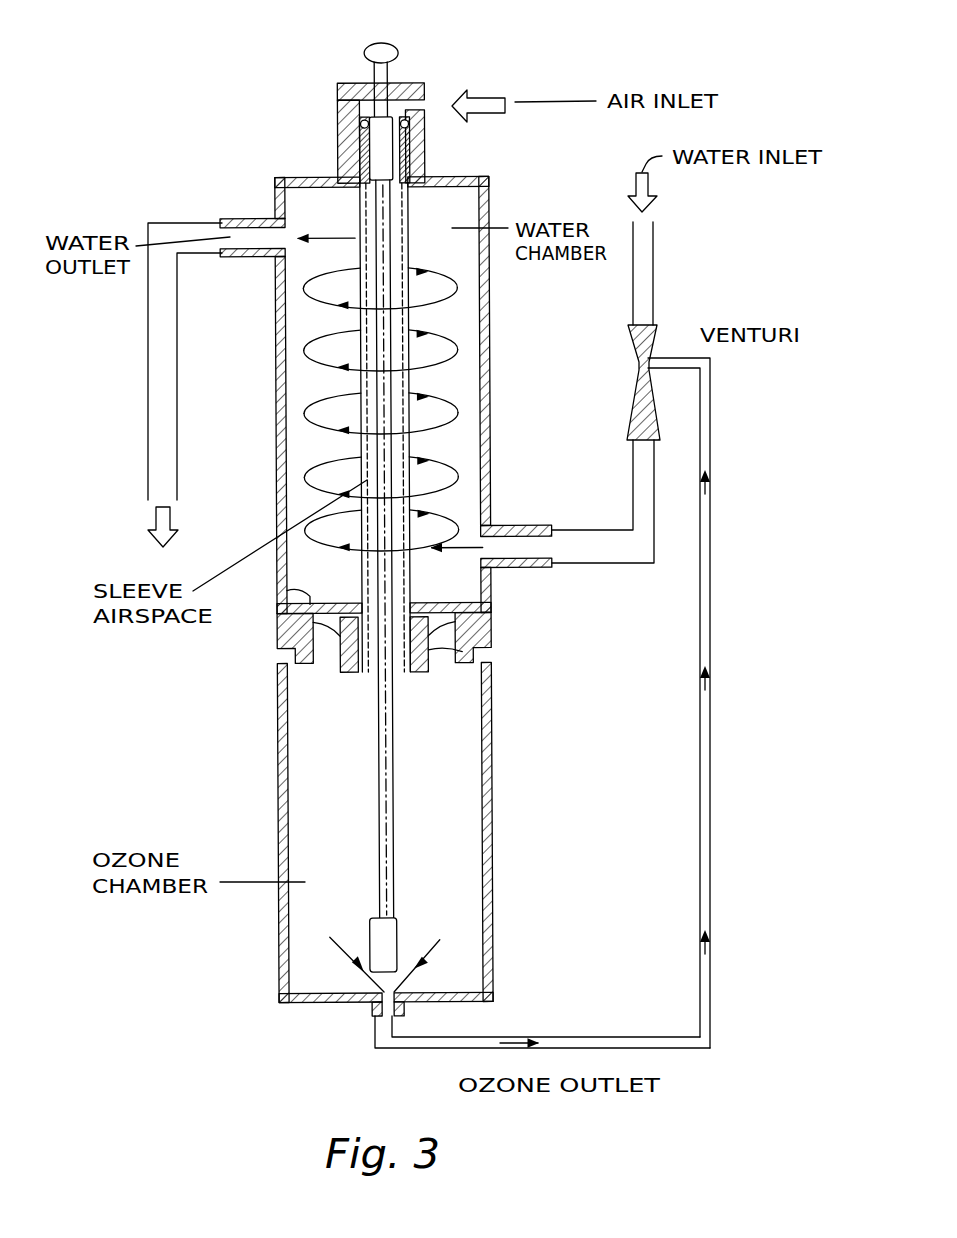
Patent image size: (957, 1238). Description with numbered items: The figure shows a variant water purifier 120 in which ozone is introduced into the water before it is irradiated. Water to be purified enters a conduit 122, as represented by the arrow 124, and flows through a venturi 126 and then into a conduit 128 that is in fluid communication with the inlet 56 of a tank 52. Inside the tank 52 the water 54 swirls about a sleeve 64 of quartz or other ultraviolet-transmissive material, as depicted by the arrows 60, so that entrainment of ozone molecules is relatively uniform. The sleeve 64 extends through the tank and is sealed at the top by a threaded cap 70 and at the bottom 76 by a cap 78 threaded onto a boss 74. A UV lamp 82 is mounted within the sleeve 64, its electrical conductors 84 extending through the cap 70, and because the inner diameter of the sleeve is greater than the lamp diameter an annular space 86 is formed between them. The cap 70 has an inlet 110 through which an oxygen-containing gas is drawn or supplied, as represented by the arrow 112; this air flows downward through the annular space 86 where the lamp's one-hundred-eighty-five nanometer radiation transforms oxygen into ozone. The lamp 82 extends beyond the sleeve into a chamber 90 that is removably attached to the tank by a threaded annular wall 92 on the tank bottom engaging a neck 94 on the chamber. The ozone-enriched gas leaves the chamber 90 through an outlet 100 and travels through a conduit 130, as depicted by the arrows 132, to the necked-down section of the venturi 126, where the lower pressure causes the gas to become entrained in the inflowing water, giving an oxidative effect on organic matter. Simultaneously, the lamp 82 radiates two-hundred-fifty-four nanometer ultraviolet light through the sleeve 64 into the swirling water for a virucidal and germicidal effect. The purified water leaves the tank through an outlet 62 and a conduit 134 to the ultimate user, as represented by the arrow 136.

The tank 52 is at (492, 472).
The water 54 is at (436, 364).
The inlet 56 is at (536, 527).
The arrows 60 is at (456, 280).
The outlet 62 is at (240, 217).
The sleeve 64 is at (456, 318).
The threaded cap 70 is at (342, 83).
The boss 74 is at (294, 634).
The bottom 76 is at (284, 590).
The cap 78 is at (340, 650).
The UV lamp 82 is at (370, 377).
The electrical conductors 84 is at (402, 48).
The annular space 86 is at (412, 390).
The chamber 90 is at (492, 902).
The threaded annular wall 92 is at (484, 622).
The neck 94 is at (472, 642).
The outlet 100 is at (389, 992).
The inlet 110 is at (426, 104).
The arrow 112 is at (490, 93).
The water purifier 120 is at (800, 545).
The conduit 122 is at (654, 246).
The arrow 124 is at (657, 204).
The venturi 126 is at (657, 338).
The conduit 128 is at (597, 565).
The conduit 130 is at (562, 1037).
The arrows 132 is at (710, 700).
The conduit 134 is at (178, 390).
The arrow 136 is at (160, 540).